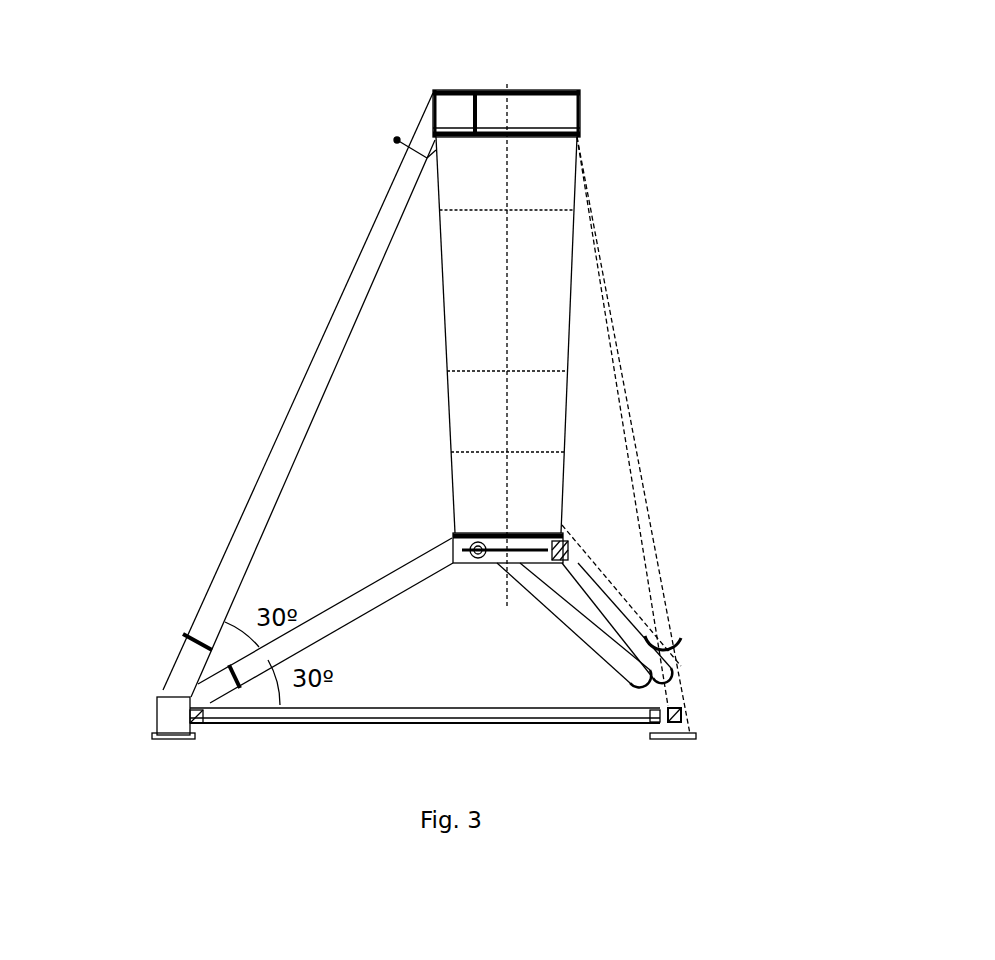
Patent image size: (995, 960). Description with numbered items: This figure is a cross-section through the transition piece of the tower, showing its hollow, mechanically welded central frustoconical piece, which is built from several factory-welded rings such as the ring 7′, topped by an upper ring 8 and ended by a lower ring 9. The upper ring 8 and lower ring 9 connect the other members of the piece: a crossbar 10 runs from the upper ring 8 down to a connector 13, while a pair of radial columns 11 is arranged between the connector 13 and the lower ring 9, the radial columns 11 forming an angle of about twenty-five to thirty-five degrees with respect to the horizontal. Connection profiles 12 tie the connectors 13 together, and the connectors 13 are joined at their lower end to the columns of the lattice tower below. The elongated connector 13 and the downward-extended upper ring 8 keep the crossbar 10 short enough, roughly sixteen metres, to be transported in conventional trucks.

The upper ring 8 is at (516, 111).
The ring of the frustoconical piece 7′ is at (540, 200).
The lower ring 9 is at (540, 532).
The crossbar 10 is at (348, 298).
The radial column 11 is at (380, 592).
The connection profile 12 is at (556, 712).
The connector 13 is at (178, 656).